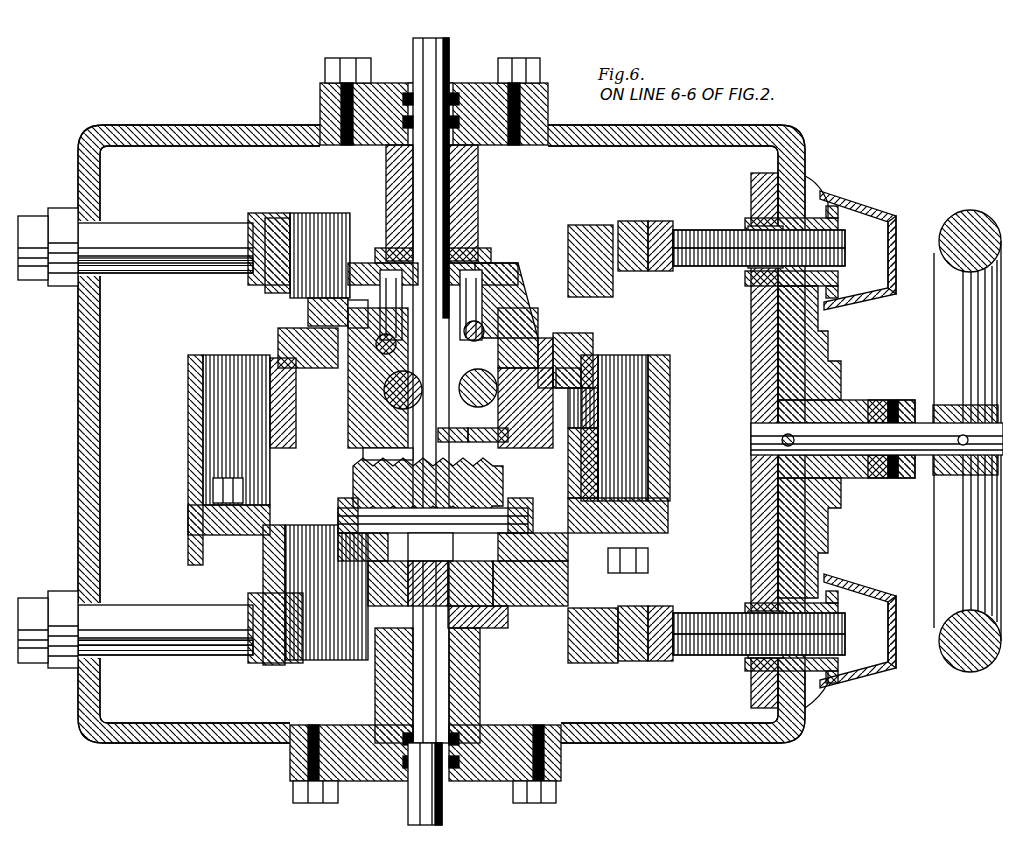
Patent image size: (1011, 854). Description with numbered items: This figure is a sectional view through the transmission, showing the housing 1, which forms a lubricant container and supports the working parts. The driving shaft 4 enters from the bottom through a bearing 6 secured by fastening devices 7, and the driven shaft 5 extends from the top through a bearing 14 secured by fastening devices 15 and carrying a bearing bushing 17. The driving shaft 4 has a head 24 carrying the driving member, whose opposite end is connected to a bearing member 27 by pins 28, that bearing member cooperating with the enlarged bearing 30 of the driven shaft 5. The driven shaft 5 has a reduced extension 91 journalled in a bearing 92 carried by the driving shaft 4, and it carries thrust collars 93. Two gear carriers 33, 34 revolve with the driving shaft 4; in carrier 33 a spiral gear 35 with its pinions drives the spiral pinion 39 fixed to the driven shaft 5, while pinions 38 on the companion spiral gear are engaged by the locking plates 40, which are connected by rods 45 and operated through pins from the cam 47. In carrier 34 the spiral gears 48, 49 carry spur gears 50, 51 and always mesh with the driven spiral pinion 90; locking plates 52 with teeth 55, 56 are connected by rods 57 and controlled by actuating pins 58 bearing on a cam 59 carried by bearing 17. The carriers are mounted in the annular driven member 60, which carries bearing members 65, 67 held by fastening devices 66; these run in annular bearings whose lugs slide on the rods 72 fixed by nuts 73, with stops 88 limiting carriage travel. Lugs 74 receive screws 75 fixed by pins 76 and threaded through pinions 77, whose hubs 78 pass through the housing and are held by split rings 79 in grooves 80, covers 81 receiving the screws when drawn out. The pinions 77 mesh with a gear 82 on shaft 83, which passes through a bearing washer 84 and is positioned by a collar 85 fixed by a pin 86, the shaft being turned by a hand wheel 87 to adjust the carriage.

The housing 1 is at (790, 137).
The driving shaft 4 is at (436, 792).
The driven shaft 5 is at (445, 162).
The bearing 6 is at (370, 775).
The fastening devices 7 is at (305, 795).
The bearing 14 is at (455, 75).
The fastening devices 15 is at (345, 58).
The bearing bushing 17 is at (455, 198).
The head 24 is at (508, 583).
The bearing member 27 is at (270, 335).
The pins 28 is at (305, 330).
The enlarged bearing 30 is at (352, 515).
The gear carrier 33 is at (195, 455).
The gear carrier 34 is at (575, 342).
The spiral gear 35 is at (575, 428).
The pinion 38 is at (320, 458).
The spiral pinion 39 is at (433, 519).
The locking plates 40 is at (533, 547).
The rods 45 is at (499, 515).
The cam 47 is at (360, 568).
The spiral gear 48 is at (388, 436).
The spiral gear 49 is at (488, 426).
The spur gear 50 is at (345, 312).
The spur gear 51 is at (506, 399).
The locking plates 52 is at (406, 378).
The teeth 55 is at (345, 305).
The teeth 56 is at (515, 325).
The rods 57 is at (478, 320).
The actuating pins 58 is at (372, 280).
The cam 59 is at (385, 265).
The driven member 60 is at (650, 440).
The bearing member 65 is at (255, 570).
The fastening devices 66 is at (205, 482).
The bearing member 67 is at (330, 230).
The rods 72 is at (245, 205).
The nuts 73 is at (25, 208).
The lugs 74 is at (622, 213).
The screws 75 is at (700, 222).
The pins 76 is at (652, 213).
The pinions 77 is at (745, 300).
The hubs 78 is at (805, 195).
The split rings 79 is at (855, 200).
The grooves 80 is at (830, 283).
The covers 81 is at (882, 286).
The gear 82 is at (743, 370).
The shaft 83 is at (838, 415).
The bearing washer 84 is at (830, 470).
The collar 85 is at (870, 470).
The pin 86 is at (893, 392).
The hand wheel 87 is at (940, 658).
The stops 88 is at (165, 268).
The driven spiral pinion 90 is at (455, 426).
The reduced extension 91 is at (440, 540).
The bearing 92 is at (480, 614).
The thrust collars 93 is at (373, 547).